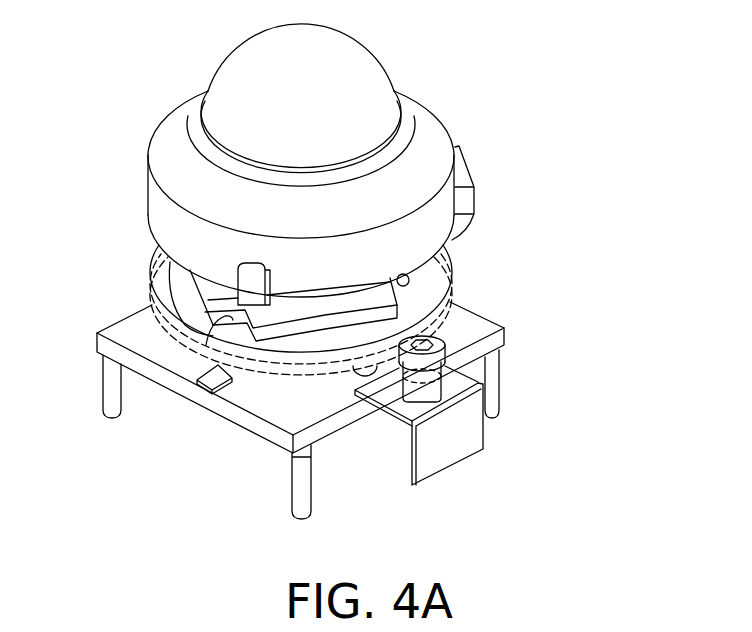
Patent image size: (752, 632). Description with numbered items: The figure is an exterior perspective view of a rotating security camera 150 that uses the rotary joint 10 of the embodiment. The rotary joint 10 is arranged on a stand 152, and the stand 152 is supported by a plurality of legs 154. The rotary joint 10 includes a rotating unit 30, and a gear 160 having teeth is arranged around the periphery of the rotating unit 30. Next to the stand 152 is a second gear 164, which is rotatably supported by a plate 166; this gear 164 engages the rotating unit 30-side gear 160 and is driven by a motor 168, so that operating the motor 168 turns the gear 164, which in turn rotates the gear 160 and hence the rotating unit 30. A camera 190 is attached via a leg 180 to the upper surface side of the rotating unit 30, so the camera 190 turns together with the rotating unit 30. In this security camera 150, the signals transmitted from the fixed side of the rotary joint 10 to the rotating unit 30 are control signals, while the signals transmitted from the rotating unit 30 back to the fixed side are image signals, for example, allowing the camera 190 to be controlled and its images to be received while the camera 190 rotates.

The camera 190 is at (408, 50).
The security camera 150 is at (505, 61).
The rotary joint 10 is at (459, 263).
The leg 180 is at (420, 280).
The gear 160 is at (150, 286).
The rotating unit 30 is at (206, 345).
The stand 152 is at (517, 333).
The legs 154 is at (292, 503).
The gear 164 is at (447, 343).
The plate 166 is at (400, 408).
The motor 168 is at (409, 472).